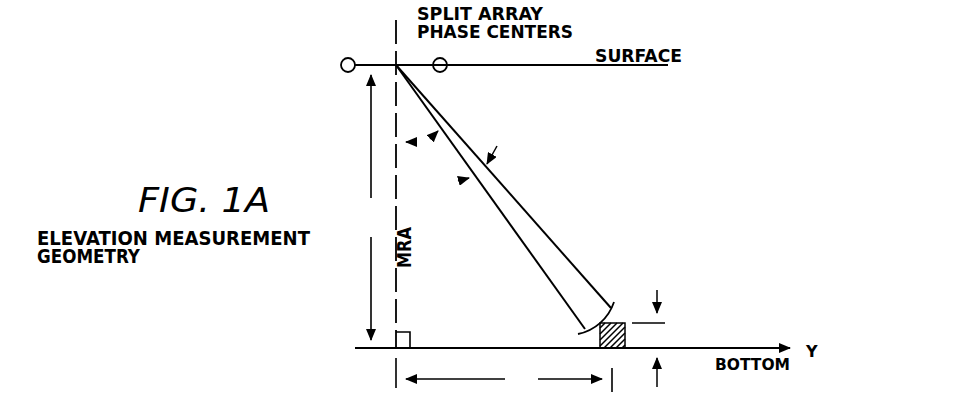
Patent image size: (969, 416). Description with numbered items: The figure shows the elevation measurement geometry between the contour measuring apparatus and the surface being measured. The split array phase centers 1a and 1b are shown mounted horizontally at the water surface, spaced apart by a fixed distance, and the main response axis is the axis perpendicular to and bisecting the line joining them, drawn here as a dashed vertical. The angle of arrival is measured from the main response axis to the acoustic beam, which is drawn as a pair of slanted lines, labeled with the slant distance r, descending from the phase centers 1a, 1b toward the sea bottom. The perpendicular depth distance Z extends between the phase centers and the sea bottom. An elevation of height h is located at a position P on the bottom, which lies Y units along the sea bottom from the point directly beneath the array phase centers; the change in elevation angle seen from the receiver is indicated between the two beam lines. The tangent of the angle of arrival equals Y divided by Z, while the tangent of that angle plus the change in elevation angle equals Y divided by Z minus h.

The detecting phase center 1a is at (342, 61).
The detecting phase center 1b is at (445, 71).
The position P is at (612, 346).
The elevation height h is at (649, 338).
The perpendicular depth distance Z is at (370, 207).
The horizontal distance along sea bottom Y is at (504, 375).
The slant range r is at (479, 139).